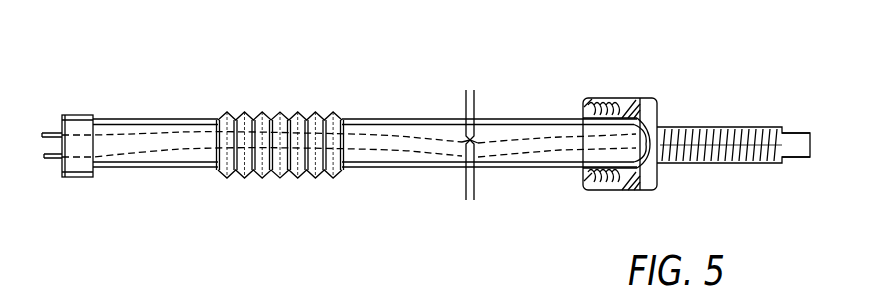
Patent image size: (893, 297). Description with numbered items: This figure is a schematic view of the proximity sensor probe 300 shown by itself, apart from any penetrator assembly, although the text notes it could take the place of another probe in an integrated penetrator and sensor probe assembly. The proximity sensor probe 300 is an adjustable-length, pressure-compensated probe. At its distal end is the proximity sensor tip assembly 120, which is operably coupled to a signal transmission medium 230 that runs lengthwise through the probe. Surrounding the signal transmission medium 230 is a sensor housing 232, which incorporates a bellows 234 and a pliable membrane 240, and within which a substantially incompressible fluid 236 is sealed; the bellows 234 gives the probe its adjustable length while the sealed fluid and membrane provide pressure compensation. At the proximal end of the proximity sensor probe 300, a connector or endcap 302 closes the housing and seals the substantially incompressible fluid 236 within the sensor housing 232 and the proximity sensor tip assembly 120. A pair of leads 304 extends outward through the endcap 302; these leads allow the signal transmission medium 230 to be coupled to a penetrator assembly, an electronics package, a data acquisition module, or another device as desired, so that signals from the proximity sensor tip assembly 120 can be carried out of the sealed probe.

The proximity sensor tip assembly 120 is at (797, 128).
The signal transmission medium 230 is at (180, 140).
The sensor housing 232 is at (506, 118).
The bellows 234 is at (305, 100).
The substantially incompressible fluid 236 is at (158, 155).
The pliable membrane 240 is at (133, 114).
The proximity sensor probe 300 is at (640, 77).
The connector or endcap 302 is at (83, 178).
The pair of leads 304 is at (53, 160).